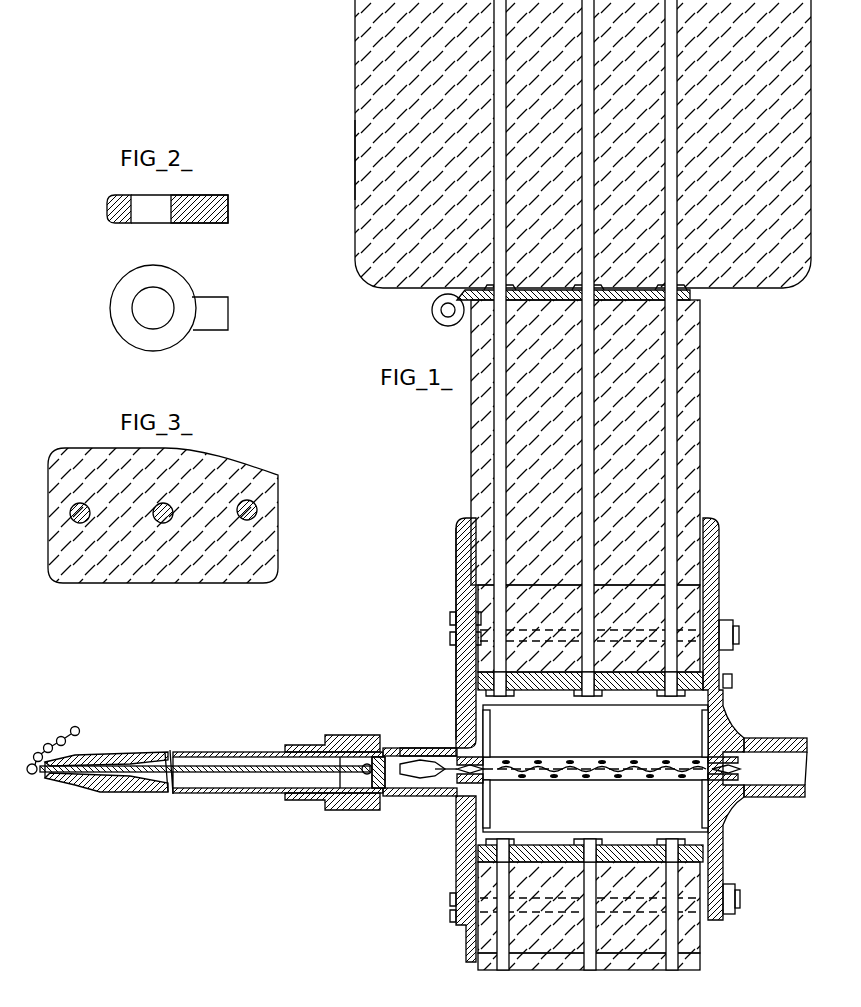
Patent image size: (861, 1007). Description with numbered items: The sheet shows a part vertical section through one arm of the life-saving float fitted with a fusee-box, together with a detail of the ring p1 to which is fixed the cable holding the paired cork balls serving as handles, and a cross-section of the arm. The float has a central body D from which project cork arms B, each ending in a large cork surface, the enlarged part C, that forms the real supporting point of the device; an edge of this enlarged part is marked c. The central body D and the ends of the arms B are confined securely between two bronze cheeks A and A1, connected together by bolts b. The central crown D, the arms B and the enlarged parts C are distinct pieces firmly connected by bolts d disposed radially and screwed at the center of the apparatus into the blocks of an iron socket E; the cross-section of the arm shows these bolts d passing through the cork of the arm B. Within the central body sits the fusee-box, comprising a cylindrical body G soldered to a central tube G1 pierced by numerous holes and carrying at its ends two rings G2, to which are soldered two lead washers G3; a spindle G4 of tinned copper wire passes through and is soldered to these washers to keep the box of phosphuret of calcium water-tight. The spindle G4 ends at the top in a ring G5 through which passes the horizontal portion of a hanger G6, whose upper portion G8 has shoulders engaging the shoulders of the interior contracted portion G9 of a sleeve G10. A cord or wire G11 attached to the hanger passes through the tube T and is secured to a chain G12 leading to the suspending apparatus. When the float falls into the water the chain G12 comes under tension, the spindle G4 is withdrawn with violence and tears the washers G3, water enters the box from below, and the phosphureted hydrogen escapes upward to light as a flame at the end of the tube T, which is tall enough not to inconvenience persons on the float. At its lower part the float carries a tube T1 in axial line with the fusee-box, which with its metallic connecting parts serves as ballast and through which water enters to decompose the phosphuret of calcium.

In FIG. 1, the enlarged part C is at (583, 144).
In FIG. 1, the block edge c is at (366, 158).
In FIG. 1, the cork arm B is at (692, 480).
In FIG. 3, the cork arm B is at (178, 566).
In FIG. 1, the central body D is at (484, 607).
In FIG. 1, the bolt d is at (503, 431).
In FIG. 3, the bolt d is at (77, 513).
In FIG. 1, the bronze cheek A is at (455, 536).
In FIG. 1, the bronze cheek A1 is at (716, 537).
In FIG. 1, the bolt b is at (692, 630).
In FIG. 1, the iron socket E is at (590, 767).
In FIG. 1, the cylindrical body G is at (642, 806).
In FIG. 1, the central tube G1 is at (600, 784).
In FIG. 1, the ring G2 is at (706, 782).
In FIG. 1, the lead washer G3 is at (742, 770).
In FIG. 1, the spindle G4 is at (614, 768).
In FIG. 1, the ring G5 is at (445, 790).
In FIG. 1, the hanger G6 is at (402, 766).
In FIG. 1, the upper portion of hanger G8 is at (378, 760).
In FIG. 1, the interior contracted portion G9 is at (330, 802).
In FIG. 1, the sleeve G10 is at (311, 742).
In FIG. 1, the cord or wire G11 is at (255, 776).
In FIG. 1, the chain G12 is at (60, 735).
In FIG. 1, the tube T is at (154, 790).
In FIG. 1, the tube T1 is at (766, 738).
In FIG. 2, the ring p1 is at (231, 206).